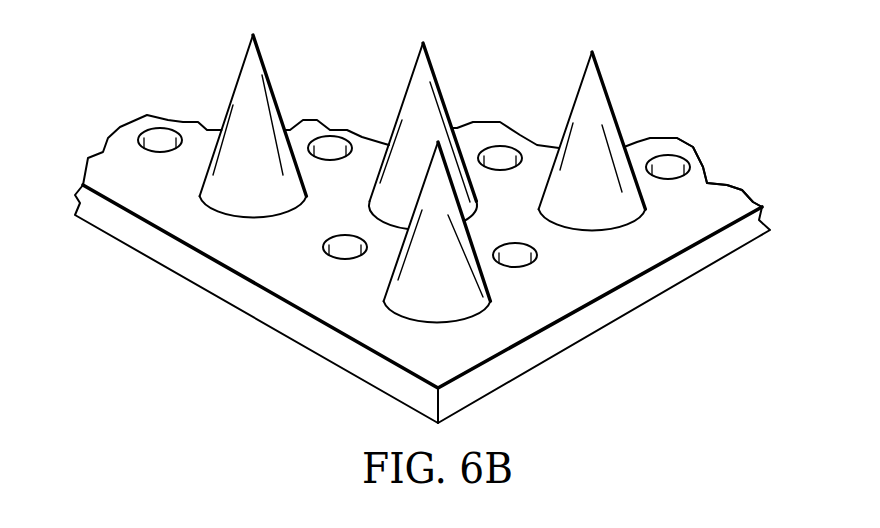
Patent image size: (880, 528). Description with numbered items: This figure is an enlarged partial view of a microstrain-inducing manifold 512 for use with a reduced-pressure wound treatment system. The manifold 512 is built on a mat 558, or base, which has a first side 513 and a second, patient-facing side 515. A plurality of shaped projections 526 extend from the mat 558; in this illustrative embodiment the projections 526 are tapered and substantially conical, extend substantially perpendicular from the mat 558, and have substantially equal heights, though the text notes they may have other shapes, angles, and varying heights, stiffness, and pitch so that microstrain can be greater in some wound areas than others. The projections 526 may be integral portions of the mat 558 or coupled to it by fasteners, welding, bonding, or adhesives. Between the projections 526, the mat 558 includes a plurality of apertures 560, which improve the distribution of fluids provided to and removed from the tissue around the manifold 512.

The microstrain-inducing manifold 512 is at (96, 144).
The first side 513 is at (242, 313).
The second, patient-facing side 515 is at (710, 187).
The mat 558 is at (763, 217).
The shaped projections 526 is at (237, 82).
The apertures 560 is at (330, 137).